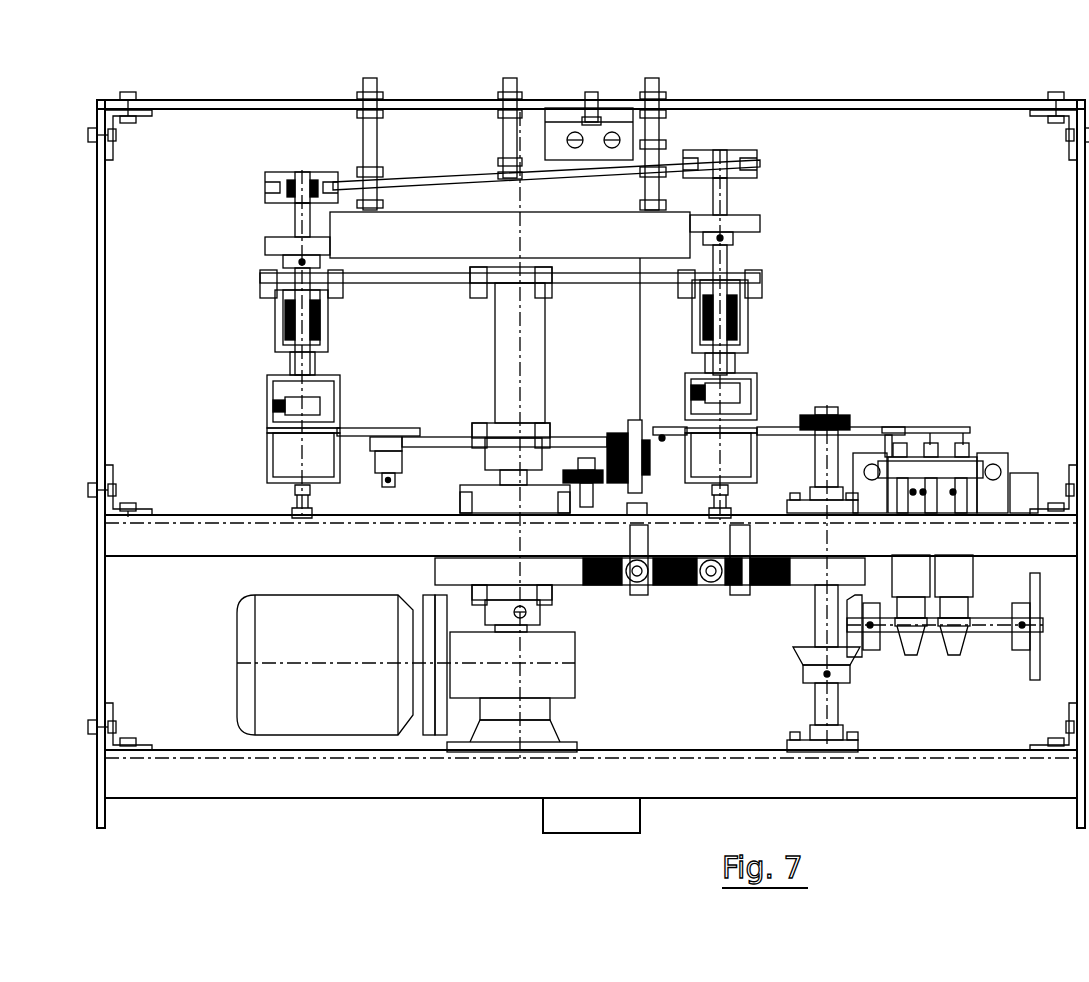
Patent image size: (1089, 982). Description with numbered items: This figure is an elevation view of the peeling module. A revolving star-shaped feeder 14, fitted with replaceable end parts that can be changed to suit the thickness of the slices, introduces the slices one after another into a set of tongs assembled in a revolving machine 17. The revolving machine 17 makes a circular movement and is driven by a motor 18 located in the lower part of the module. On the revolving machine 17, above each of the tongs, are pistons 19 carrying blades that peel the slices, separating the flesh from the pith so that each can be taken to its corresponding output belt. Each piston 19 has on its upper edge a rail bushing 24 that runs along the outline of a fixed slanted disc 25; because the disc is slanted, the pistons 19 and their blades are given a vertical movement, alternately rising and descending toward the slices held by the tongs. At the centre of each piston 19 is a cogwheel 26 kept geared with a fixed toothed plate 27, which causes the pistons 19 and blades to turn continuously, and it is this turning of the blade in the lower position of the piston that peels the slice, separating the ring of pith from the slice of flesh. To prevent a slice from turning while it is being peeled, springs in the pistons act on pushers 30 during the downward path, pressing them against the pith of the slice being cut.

The star-shaped feeder 14 is at (875, 427).
The revolving machine 17 is at (432, 447).
The motor 18 is at (270, 623).
The pistons 19 is at (293, 428).
The rail bushing 24 is at (282, 172).
The fixed slanted disc 25 is at (421, 172).
The cogwheel 26 is at (272, 243).
The fixed toothed plate 27 is at (668, 235).
The pushers 30 is at (338, 392).